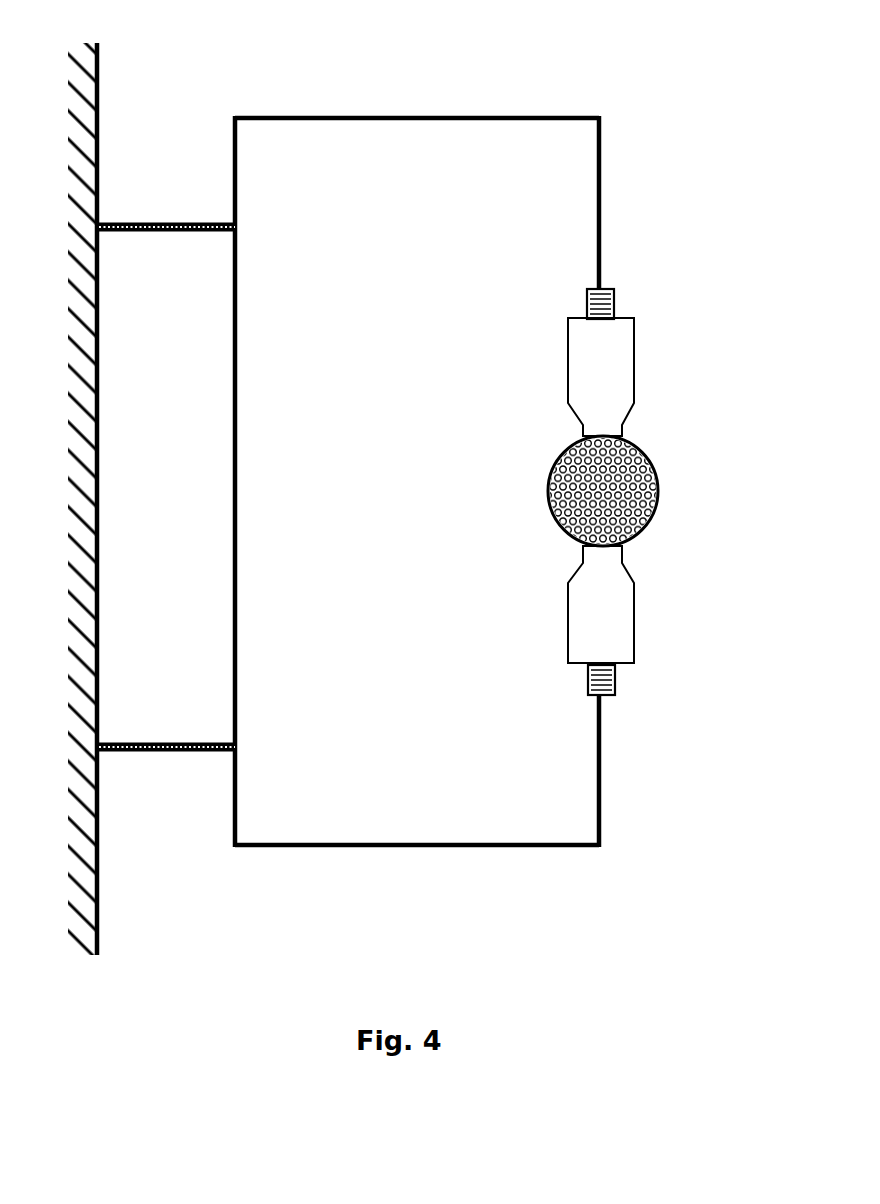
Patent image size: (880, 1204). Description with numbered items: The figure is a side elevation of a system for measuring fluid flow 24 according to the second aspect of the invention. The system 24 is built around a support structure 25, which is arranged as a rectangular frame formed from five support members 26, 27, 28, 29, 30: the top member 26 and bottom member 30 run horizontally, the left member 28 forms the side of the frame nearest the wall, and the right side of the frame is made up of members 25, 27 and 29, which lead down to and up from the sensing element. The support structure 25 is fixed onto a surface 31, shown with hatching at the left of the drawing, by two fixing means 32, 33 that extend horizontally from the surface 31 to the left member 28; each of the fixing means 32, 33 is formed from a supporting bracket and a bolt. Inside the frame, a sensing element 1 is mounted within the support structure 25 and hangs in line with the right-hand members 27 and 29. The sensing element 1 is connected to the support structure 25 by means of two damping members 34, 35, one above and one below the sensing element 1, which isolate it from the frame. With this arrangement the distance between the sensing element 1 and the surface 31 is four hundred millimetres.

The sensing element 1 is at (635, 388).
The system for measuring fluid flow 24 is at (462, 457).
The support structure 25 is at (600, 132).
The support member 26 is at (330, 117).
The support member 27 is at (600, 257).
The support member 28 is at (237, 428).
The support member 29 is at (602, 752).
The support member 30 is at (372, 846).
The surface 31 is at (95, 63).
The fixing means 32 is at (114, 233).
The fixing means 33 is at (120, 753).
The damping member 34 is at (618, 295).
The damping member 35 is at (618, 680).